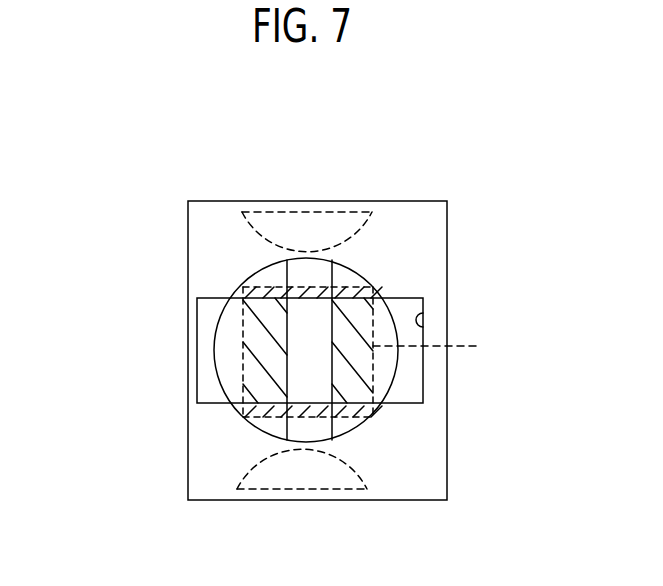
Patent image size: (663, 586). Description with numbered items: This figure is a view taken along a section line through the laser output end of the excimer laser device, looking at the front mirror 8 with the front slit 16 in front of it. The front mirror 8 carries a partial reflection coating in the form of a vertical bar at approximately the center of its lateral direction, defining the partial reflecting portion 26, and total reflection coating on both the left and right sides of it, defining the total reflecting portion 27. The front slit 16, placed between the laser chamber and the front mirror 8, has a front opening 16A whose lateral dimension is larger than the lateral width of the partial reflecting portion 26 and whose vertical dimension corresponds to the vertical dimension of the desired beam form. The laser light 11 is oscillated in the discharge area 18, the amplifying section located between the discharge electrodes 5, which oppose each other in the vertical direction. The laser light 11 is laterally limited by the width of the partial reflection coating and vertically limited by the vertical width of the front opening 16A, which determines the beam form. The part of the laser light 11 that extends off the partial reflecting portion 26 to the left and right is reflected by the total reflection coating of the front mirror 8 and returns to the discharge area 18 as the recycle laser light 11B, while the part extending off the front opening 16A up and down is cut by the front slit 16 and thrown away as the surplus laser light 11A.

The discharge electrode 5 is at (304, 211).
The front mirror 8 is at (373, 410).
The laser light 11 is at (302, 362).
The surplus laser light 11A is at (257, 410).
The recycle laser light 11B is at (255, 330).
The front slit 16 is at (447, 487).
The front opening 16A is at (416, 313).
The discharge area 18 is at (442, 346).
The partial reflecting portion 26 is at (321, 263).
The total reflecting portion 27 is at (267, 277).